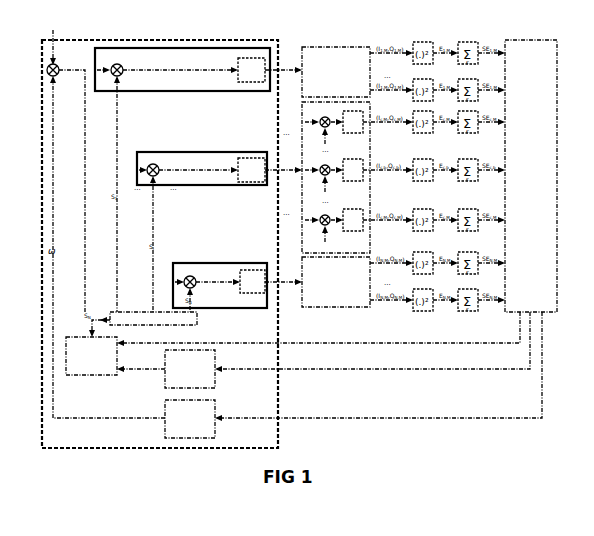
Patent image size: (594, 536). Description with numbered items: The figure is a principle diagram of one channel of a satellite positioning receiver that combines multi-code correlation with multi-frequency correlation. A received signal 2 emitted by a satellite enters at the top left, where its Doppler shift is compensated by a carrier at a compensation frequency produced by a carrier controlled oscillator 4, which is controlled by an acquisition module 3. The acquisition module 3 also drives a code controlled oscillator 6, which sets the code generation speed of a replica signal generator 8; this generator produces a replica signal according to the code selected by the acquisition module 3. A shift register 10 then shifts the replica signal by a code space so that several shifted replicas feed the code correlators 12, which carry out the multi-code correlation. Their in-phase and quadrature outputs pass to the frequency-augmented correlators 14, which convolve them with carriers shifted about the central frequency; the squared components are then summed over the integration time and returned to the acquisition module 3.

The received signal 2 is at (160, 232).
The acquisition module 3 is at (547, 298).
The carrier controlled oscillator 4 is at (183, 430).
The code controlled oscillator 6 is at (175, 370).
The replica signal generator 8 is at (78, 355).
The shift register 10 is at (108, 314).
The code correlators 12 is at (165, 58).
The frequency-augmented correlators 14 is at (318, 55).